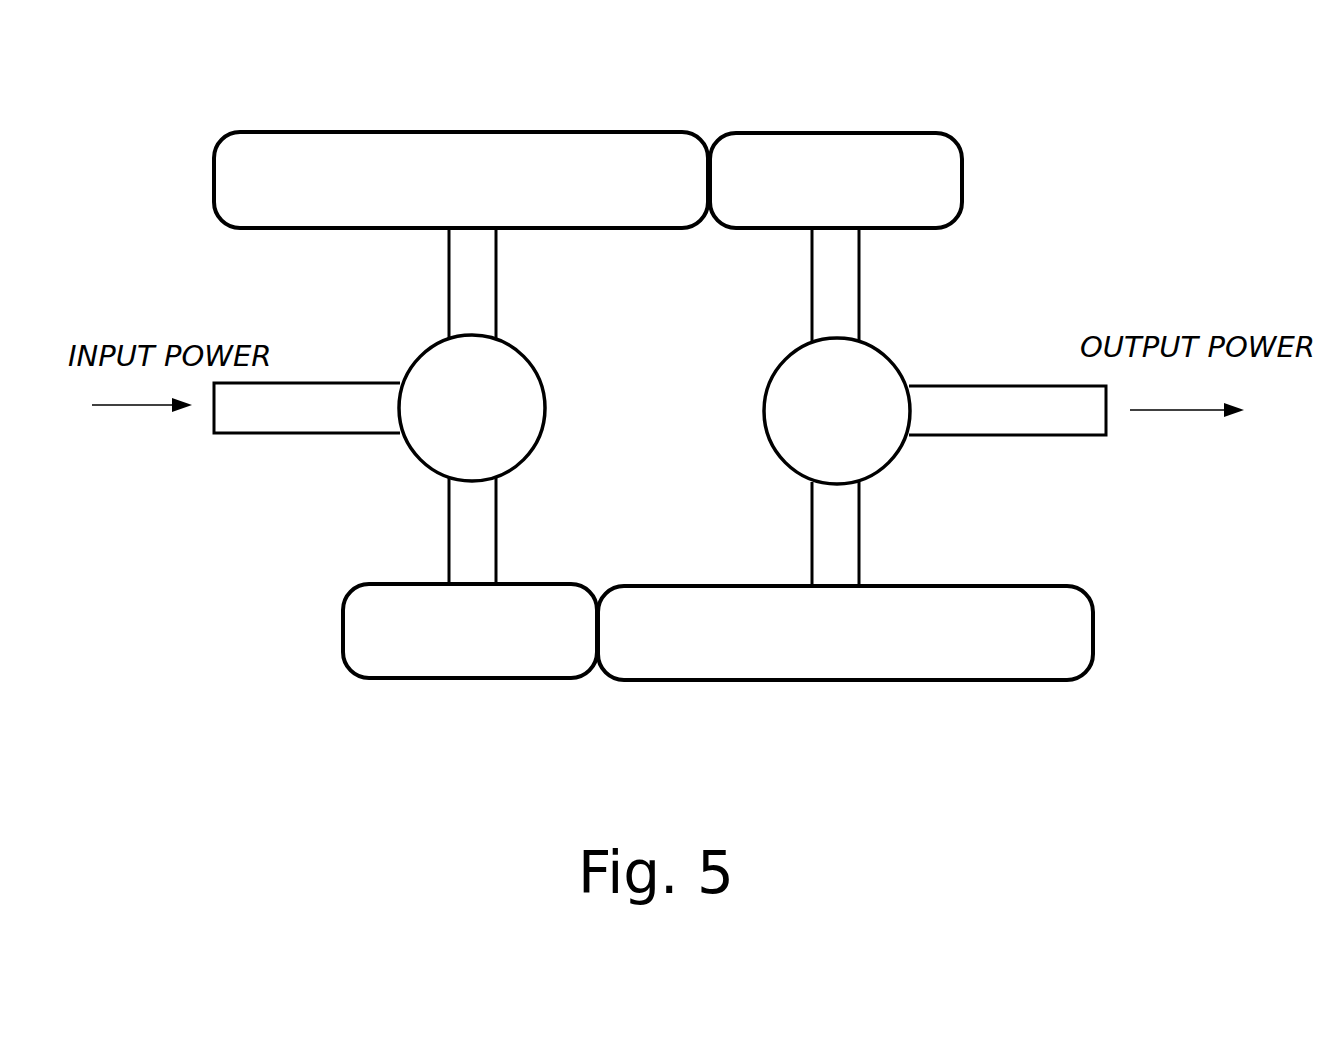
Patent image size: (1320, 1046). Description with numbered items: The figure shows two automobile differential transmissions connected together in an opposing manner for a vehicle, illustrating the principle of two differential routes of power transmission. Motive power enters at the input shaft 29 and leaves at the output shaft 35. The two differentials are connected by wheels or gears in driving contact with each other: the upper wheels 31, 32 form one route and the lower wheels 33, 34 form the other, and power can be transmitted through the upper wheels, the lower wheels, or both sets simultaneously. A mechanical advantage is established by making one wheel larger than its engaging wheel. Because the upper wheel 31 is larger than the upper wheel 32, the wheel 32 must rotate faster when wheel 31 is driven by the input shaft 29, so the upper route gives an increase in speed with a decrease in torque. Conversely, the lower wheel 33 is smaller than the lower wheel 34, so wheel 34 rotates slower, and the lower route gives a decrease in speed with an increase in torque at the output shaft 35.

The input shaft 29 is at (260, 435).
The upper wheel 31 is at (357, 130).
The upper wheel 32 is at (912, 133).
The lower wheel 33 is at (409, 678).
The lower wheel 34 is at (931, 681).
The output shaft 35 is at (1020, 385).